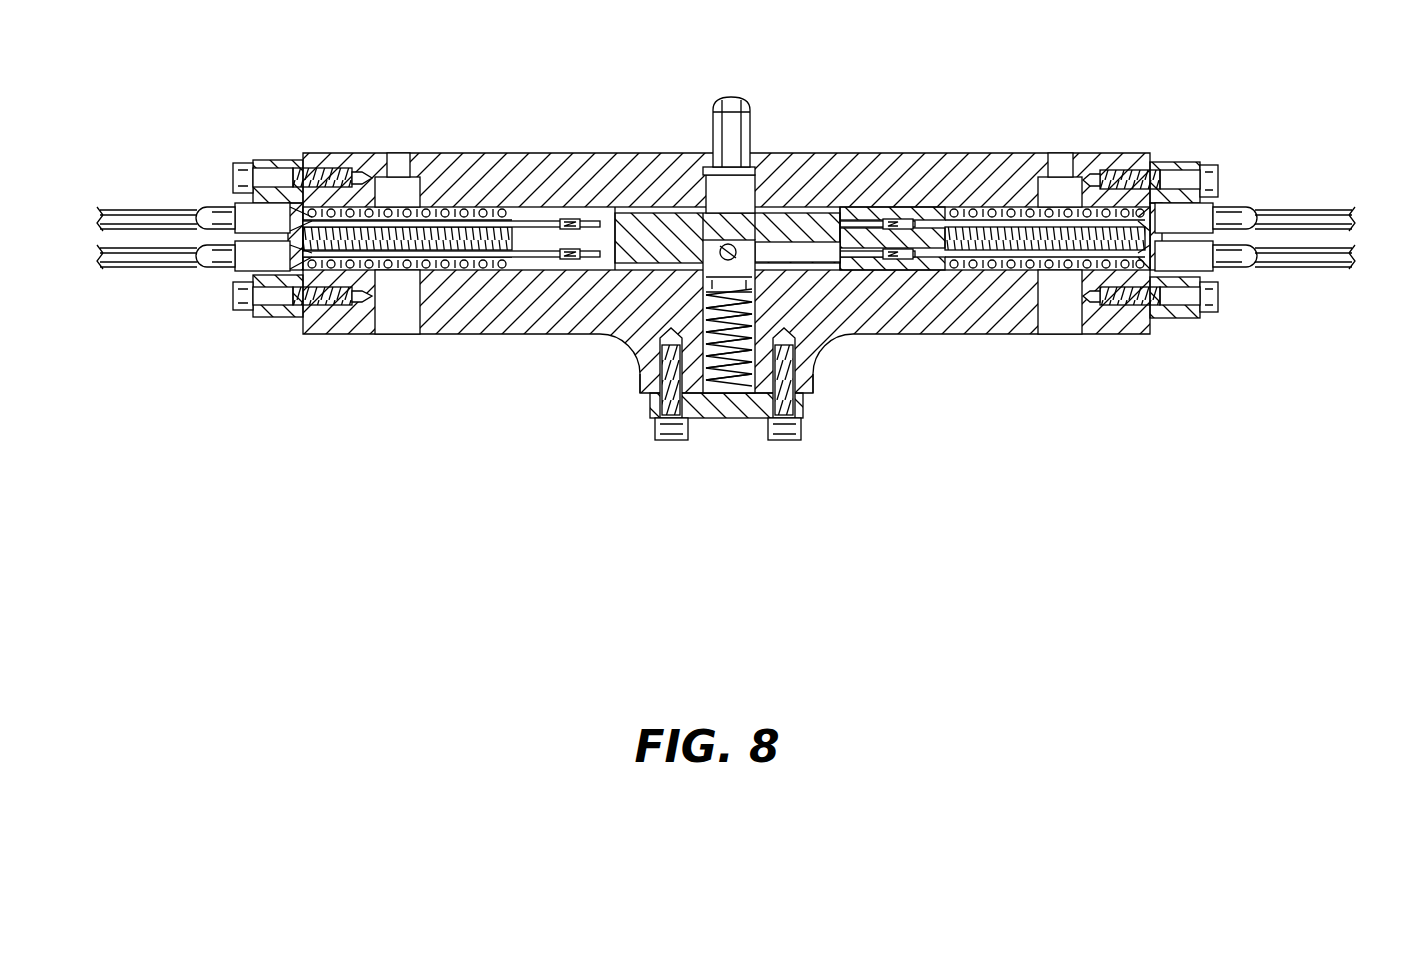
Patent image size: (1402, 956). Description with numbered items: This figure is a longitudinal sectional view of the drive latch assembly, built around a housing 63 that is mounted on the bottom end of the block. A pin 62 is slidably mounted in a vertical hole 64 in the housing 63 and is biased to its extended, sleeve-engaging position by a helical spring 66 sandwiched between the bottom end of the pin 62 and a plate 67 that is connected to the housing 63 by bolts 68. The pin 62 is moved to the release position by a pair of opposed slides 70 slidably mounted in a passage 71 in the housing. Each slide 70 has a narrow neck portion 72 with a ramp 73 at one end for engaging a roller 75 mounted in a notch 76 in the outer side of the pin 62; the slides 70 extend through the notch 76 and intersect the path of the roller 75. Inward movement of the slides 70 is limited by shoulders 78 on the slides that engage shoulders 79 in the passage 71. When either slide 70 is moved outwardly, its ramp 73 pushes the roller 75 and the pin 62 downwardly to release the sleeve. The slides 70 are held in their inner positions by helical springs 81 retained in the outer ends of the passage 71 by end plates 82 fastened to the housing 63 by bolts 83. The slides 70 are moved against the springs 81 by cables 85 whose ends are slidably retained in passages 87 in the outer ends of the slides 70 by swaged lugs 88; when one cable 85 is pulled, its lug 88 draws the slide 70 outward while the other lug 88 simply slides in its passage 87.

The pin 62 is at (731, 95).
The housing 63 is at (918, 337).
The vertical hole 64 is at (700, 367).
The helical spring 66 is at (725, 385).
The plate 67 is at (805, 410).
The bolts 68 is at (665, 440).
The slides 70 is at (662, 212).
The passage 71 is at (478, 205).
The narrow neck portion 72 is at (817, 212).
The ramp 73 is at (792, 240).
The roller 75 is at (700, 272).
The notch 76 is at (700, 198).
The shoulders 78 is at (622, 205).
The shoulders 79 is at (813, 253).
The helical springs 81 is at (1005, 210).
The end plates 82 is at (268, 318).
The bolts 83 is at (240, 178).
The cables 85 is at (418, 212).
The passages 87 is at (903, 220).
The swaged lugs 88 is at (555, 212).